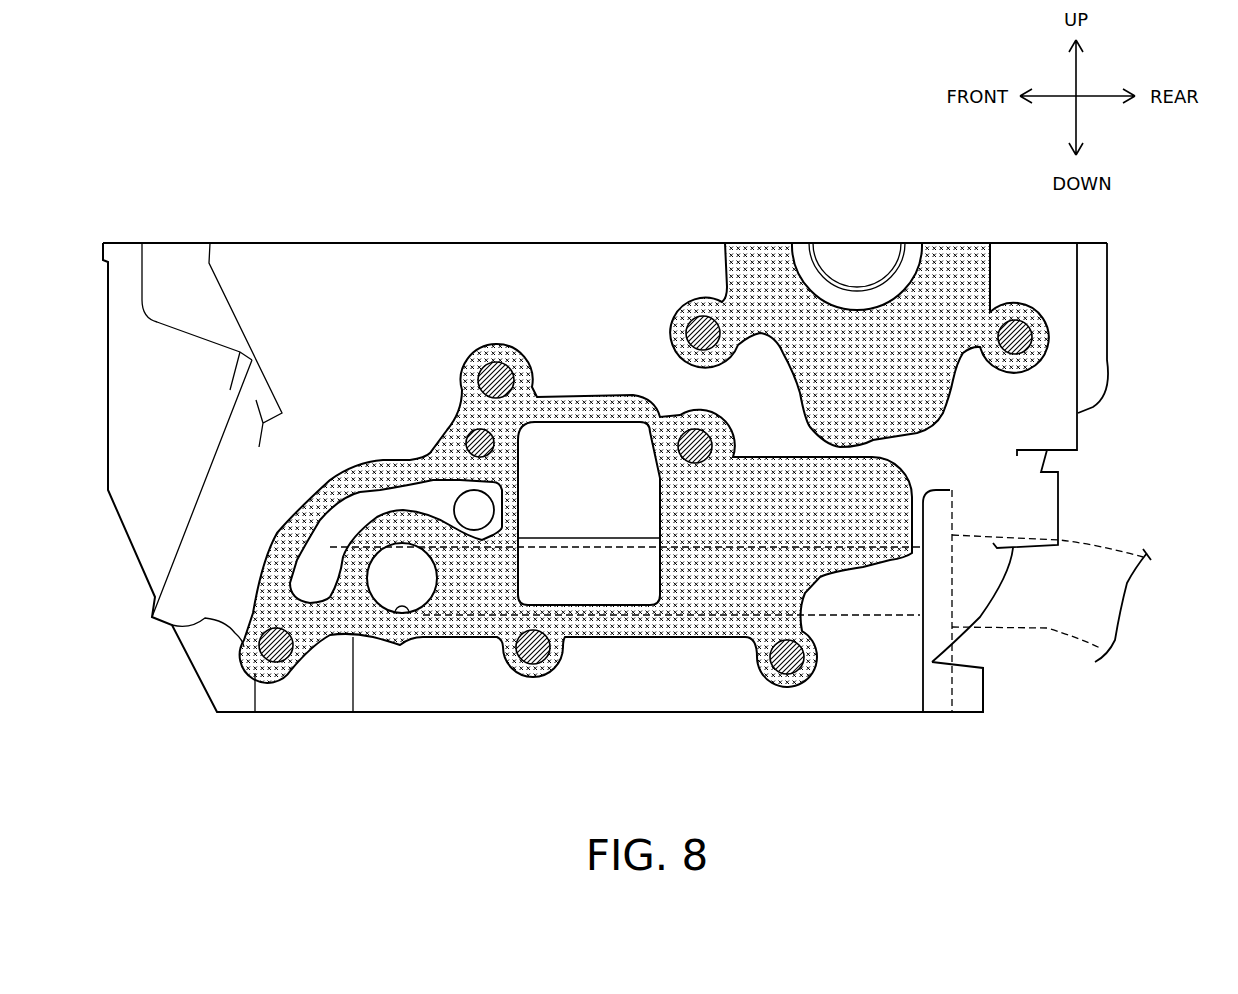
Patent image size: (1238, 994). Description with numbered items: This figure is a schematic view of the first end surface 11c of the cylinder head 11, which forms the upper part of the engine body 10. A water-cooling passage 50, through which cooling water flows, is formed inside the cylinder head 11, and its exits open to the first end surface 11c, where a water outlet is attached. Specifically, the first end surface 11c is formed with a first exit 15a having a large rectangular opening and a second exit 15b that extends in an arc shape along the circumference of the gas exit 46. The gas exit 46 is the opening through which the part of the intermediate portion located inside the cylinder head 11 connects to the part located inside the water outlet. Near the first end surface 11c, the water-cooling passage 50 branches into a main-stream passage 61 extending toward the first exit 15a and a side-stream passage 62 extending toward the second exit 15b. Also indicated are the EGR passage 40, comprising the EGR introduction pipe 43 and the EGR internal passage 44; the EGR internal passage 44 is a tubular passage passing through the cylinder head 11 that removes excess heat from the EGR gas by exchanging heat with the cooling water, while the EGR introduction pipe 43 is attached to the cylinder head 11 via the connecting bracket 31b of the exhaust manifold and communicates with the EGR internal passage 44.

The engine body 10 is at (605, 442).
The cylinder head 11 is at (290, 243).
The first end surface 11c is at (519, 276).
The first exit 15a is at (605, 420).
The second exit 15b is at (367, 490).
The connecting bracket 31b is at (953, 679).
The EGR passage 40 is at (758, 617).
The EGR introduction pipe 43 is at (1113, 550).
The EGR internal passage 44 is at (617, 580).
The gas exit 46 is at (392, 613).
The water-cooling passage 50 is at (566, 498).
The main-stream passage 61 is at (555, 455).
The side-stream passage 62 is at (432, 503).